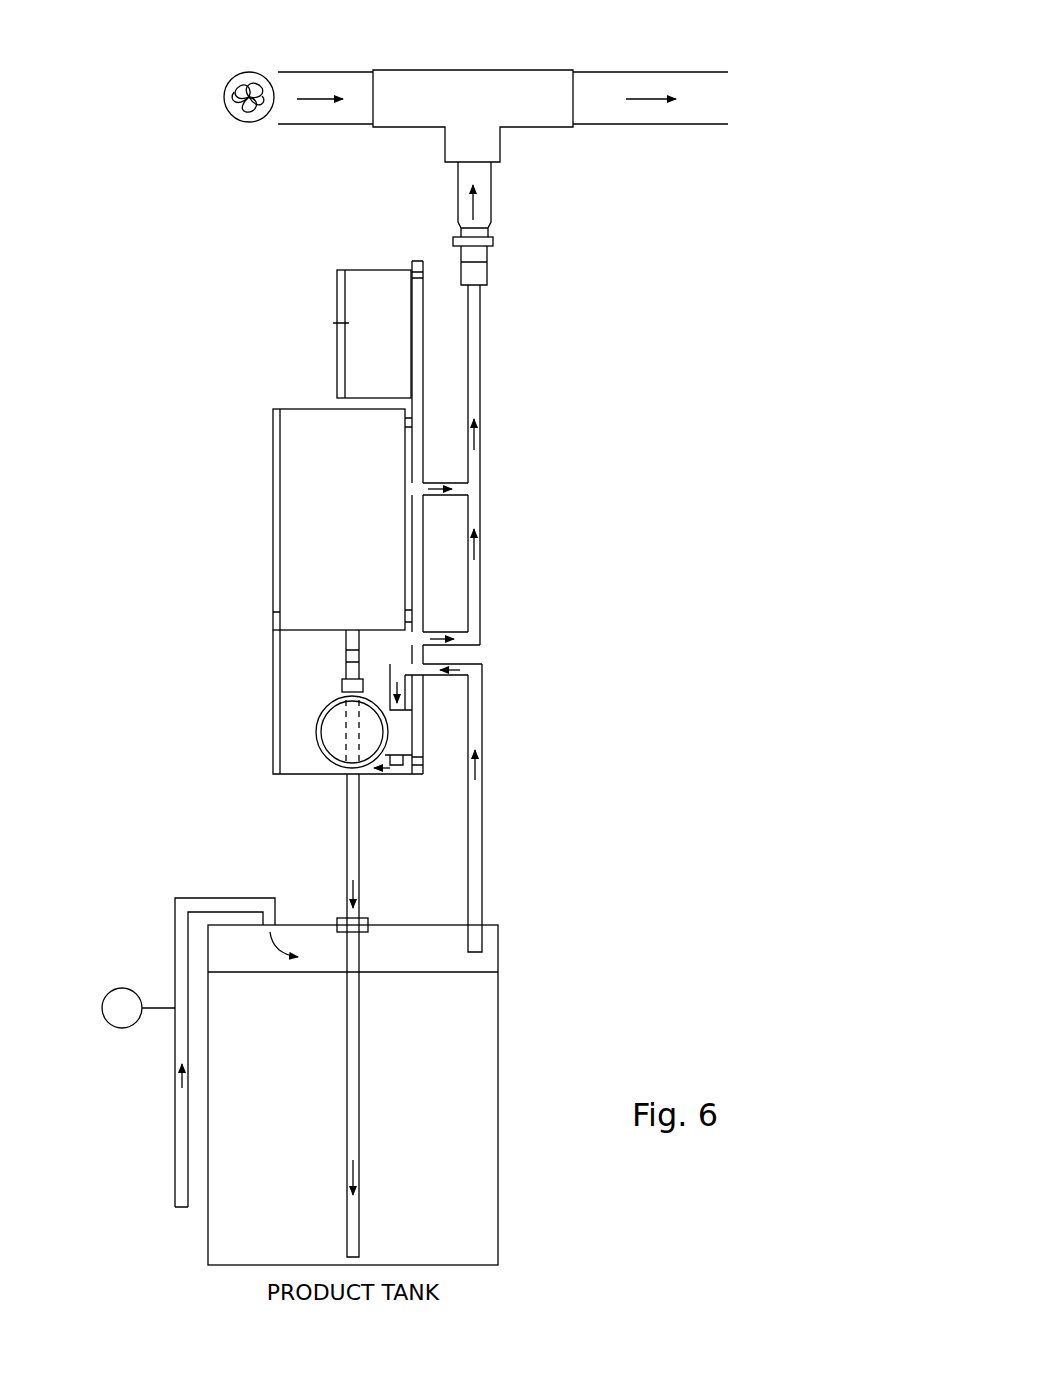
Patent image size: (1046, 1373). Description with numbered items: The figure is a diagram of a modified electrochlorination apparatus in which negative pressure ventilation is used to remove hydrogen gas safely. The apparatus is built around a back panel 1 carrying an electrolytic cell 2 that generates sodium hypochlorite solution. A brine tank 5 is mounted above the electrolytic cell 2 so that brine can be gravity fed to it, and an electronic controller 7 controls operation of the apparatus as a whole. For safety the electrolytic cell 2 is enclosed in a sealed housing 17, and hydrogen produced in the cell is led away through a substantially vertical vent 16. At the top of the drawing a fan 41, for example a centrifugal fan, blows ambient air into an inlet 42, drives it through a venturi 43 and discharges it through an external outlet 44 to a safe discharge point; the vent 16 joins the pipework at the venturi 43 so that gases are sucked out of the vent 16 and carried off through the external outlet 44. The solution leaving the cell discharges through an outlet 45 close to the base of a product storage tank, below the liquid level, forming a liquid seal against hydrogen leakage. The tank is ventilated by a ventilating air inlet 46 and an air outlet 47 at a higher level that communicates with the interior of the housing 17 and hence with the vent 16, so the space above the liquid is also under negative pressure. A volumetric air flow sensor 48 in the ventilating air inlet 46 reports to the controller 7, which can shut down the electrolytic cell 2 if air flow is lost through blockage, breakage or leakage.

The back panel 1 is at (420, 285).
The electrolytic cell 2 is at (318, 735).
The brine tank 5 is at (285, 553).
The electronic controller 7 is at (353, 323).
The vent 16 is at (483, 330).
The sealed housing 17 is at (273, 668).
The fan 41 is at (259, 74).
The inlet 42 is at (298, 126).
The venturi 43 is at (470, 78).
The external outlet 44 is at (714, 97).
The outlet 45 is at (357, 1257).
The ventilating air inlet 46 is at (175, 1118).
The air outlet 47 is at (477, 952).
The volumetric air flow sensor 48 is at (122, 988).